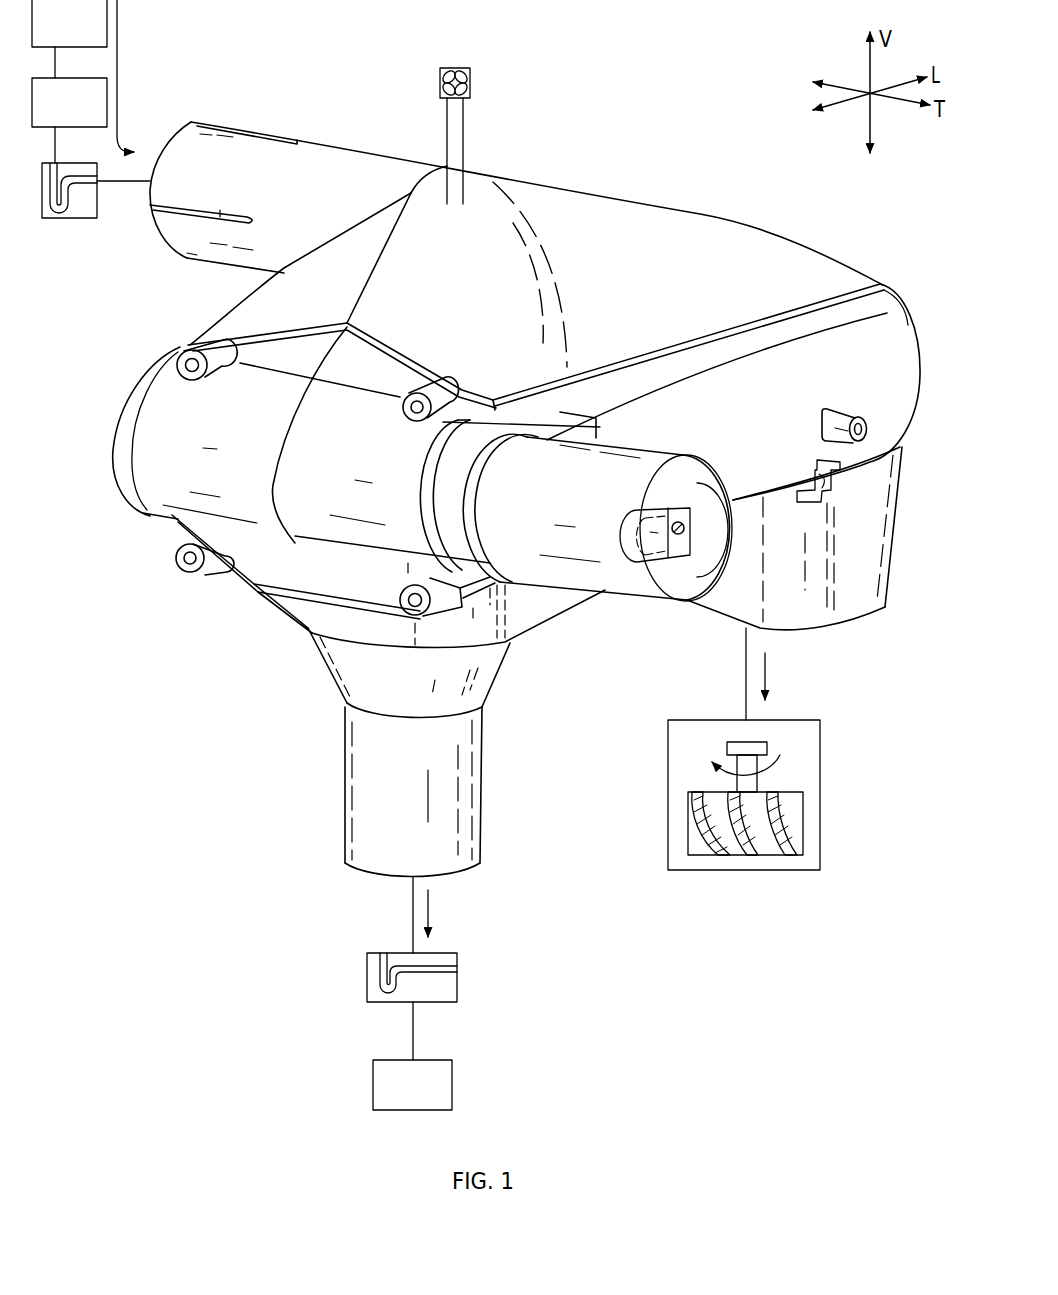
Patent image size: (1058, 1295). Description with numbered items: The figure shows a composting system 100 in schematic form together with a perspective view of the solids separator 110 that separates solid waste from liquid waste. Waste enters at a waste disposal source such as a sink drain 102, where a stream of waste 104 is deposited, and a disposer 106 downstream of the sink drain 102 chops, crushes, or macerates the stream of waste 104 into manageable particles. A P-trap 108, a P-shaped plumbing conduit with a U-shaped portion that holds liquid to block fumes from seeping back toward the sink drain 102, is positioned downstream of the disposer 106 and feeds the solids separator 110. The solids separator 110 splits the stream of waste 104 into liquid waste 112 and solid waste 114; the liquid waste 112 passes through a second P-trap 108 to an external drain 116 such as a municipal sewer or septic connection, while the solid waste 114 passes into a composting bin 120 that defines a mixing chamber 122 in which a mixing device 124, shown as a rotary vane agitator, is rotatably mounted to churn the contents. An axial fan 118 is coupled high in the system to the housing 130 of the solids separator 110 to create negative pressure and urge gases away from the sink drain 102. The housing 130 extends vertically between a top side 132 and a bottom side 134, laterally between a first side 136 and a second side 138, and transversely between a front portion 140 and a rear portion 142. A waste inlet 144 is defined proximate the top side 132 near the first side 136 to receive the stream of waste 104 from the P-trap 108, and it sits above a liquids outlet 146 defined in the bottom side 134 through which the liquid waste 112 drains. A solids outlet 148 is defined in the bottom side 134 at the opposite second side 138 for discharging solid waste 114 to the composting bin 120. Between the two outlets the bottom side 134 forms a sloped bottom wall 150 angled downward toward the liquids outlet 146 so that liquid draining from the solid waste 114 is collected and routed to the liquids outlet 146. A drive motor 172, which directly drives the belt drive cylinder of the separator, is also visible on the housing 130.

The composting system 100 is at (728, 122).
The sink drain 102 is at (88, 37).
The stream of waste 104 is at (118, 78).
The disposer 106 is at (88, 114).
The P-trap 108 is at (70, 229).
The solids separator 110 is at (561, 182).
The liquid waste 112 is at (433, 923).
The solid waste 114 is at (767, 674).
The external drain 116 is at (432, 1097).
The fan 118 is at (473, 85).
The composting bin 120 is at (824, 822).
The mixing chamber 122 is at (795, 763).
The mixing device 124 is at (757, 856).
The housing 130 is at (703, 227).
The top side 132 is at (607, 224).
The bottom side 134 is at (568, 608).
The first side 136 is at (160, 488).
The second side 138 is at (907, 305).
The front portion 140 is at (802, 363).
The rear portion 142 is at (187, 344).
The waste inlet 144 is at (243, 153).
The liquids outlet 146 is at (467, 810).
The solids outlet 148 is at (868, 557).
The sloped bottom wall 150 is at (543, 632).
The drive motor 172 is at (592, 500).